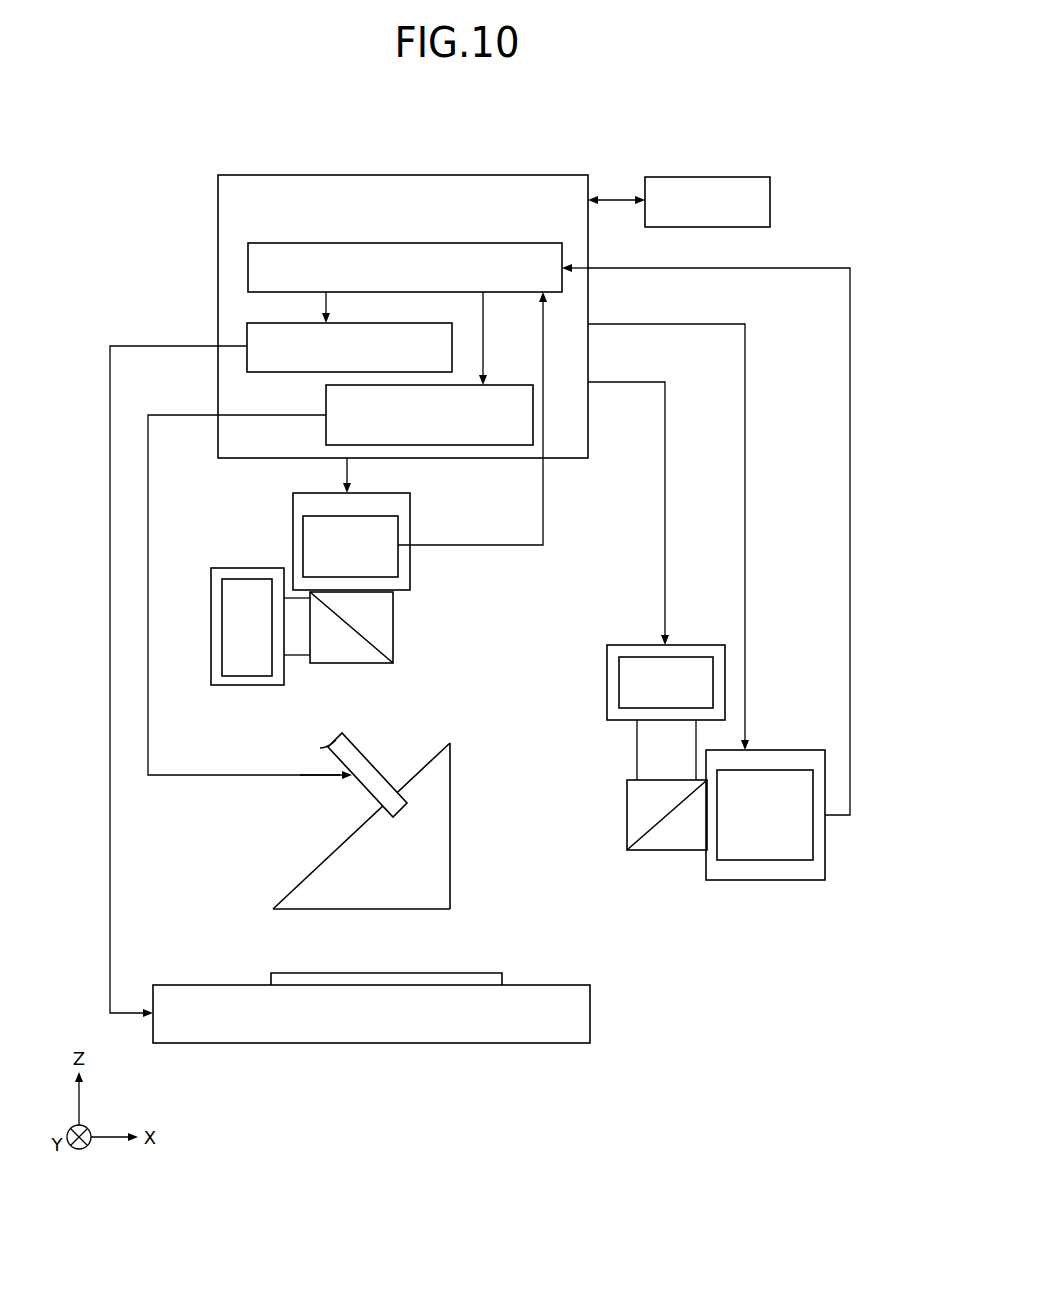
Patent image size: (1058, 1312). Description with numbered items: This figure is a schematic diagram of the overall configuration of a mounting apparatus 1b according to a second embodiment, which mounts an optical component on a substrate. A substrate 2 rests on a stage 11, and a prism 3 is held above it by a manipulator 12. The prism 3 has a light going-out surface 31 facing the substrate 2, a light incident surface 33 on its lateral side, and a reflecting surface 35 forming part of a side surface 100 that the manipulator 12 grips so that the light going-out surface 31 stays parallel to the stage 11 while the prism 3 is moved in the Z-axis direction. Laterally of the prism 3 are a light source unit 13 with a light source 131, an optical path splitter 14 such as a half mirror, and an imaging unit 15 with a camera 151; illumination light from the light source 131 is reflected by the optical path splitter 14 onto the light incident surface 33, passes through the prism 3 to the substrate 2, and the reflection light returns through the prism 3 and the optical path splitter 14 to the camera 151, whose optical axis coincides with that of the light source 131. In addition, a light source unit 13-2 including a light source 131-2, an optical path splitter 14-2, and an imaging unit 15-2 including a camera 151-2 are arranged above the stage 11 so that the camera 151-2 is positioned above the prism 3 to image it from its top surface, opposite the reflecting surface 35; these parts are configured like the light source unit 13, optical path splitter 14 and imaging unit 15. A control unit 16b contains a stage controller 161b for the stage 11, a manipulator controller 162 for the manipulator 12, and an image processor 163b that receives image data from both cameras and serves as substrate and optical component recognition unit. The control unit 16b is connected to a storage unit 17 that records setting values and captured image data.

The mounting apparatus 1b is at (625, 148).
The control unit 16b is at (509, 176).
The image processor 163b is at (512, 244).
The stage controller 161b is at (392, 325).
The manipulator controller 162 is at (520, 384).
The storage unit 17 is at (729, 177).
The imaging unit 15-2 is at (391, 541).
The camera 151-2 is at (398, 568).
The optical path splitter 14-2 is at (393, 627).
The light source unit 13-2 is at (247, 620).
The light source 131-2 is at (252, 582).
The light source unit 13 is at (632, 671).
The light source 131 is at (619, 688).
The optical path splitter 14 is at (653, 851).
The imaging unit 15 is at (765, 838).
The camera 151 is at (748, 862).
The manipulator 12 is at (355, 790).
The side surface 100 is at (420, 778).
The prism 3 is at (384, 846).
The light going-out surface 31 is at (350, 910).
The light incident surface 33 is at (450, 827).
The reflecting surface 35 is at (324, 864).
The substrate 2 is at (465, 974).
The stage 11 is at (553, 986).